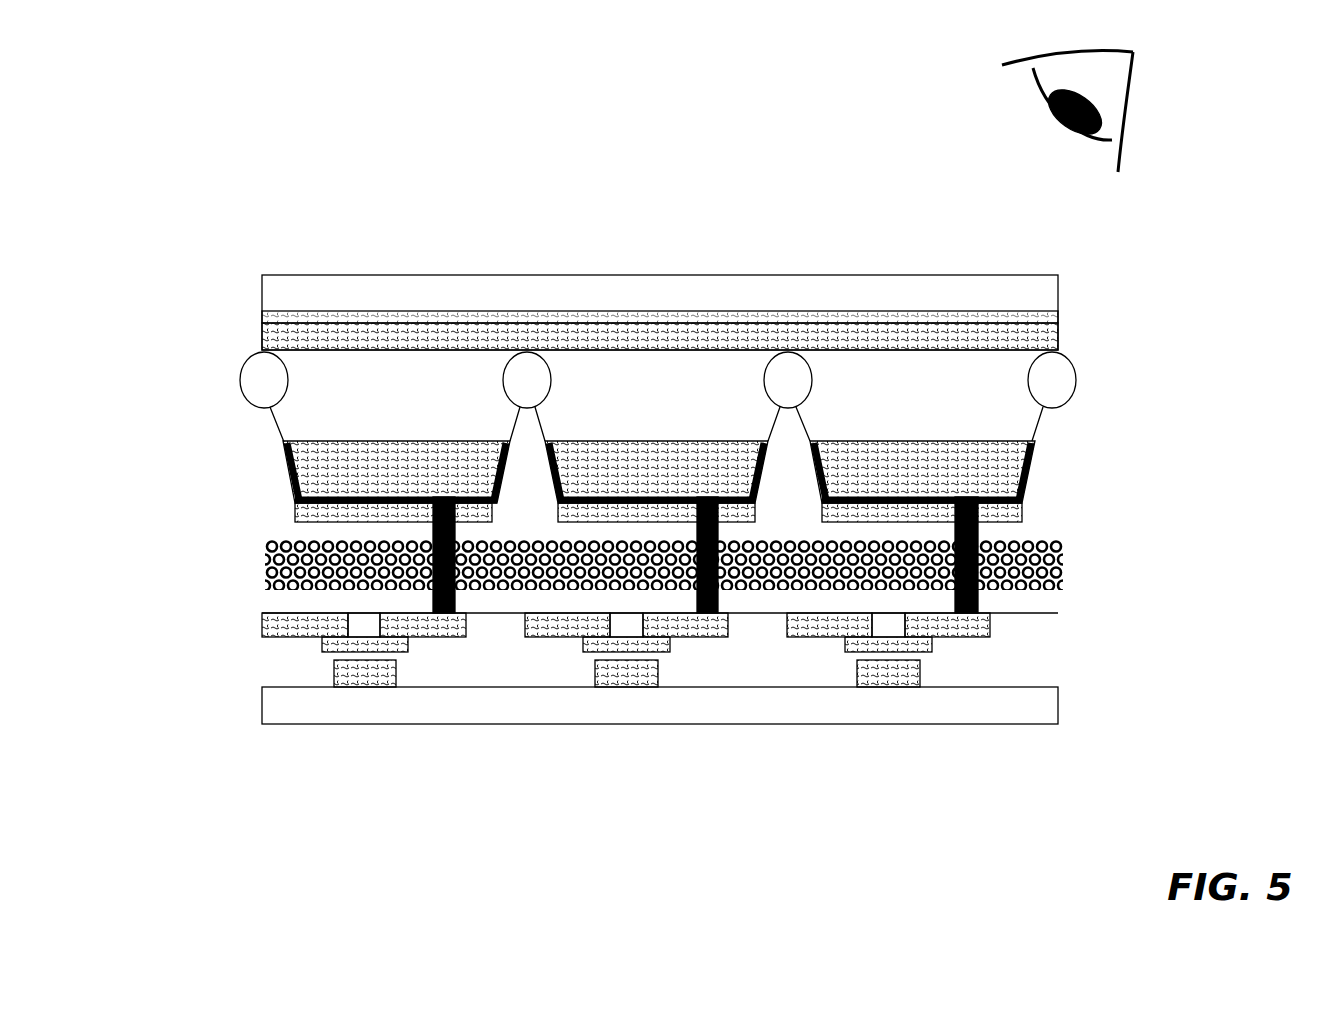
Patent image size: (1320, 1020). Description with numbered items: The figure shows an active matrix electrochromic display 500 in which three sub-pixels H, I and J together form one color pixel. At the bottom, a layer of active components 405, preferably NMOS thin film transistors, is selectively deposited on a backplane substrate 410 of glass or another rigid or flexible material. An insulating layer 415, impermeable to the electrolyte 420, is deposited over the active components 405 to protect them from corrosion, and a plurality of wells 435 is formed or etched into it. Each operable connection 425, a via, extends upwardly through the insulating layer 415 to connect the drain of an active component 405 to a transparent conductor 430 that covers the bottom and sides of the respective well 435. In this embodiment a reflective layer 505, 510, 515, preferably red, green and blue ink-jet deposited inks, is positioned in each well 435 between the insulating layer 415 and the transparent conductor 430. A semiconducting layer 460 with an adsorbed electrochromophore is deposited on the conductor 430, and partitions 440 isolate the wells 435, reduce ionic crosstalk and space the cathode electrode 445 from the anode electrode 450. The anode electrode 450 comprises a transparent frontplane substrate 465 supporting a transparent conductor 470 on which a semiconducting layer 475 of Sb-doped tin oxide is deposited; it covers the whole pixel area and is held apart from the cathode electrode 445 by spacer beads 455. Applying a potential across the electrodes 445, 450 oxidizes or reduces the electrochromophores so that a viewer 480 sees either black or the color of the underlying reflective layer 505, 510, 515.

The active components 405 is at (583, 667).
The backplane substrate 410 is at (818, 724).
The insulating layer 415 is at (1088, 552).
The electrolyte 420 is at (640, 395).
The operable connection 425 is at (985, 588).
The conductor 430 is at (377, 505).
The wells 435 is at (992, 420).
The partitions 440 is at (775, 366).
The cathode electrode 445 is at (233, 408).
The anode electrode 450 is at (233, 283).
The spacer beads 455 is at (500, 366).
The semiconducting layer 460 is at (940, 441).
The frontplane substrate 465 is at (913, 275).
The transparent conductor 470 is at (280, 311).
The semiconducting layer 475 is at (405, 345).
The viewer 480 is at (1125, 86).
The electrochromic display 500 is at (1208, 838).
The reflective layer 505 is at (488, 521).
The reflective layer 510 is at (757, 521).
The reflective layer 515 is at (1022, 521).